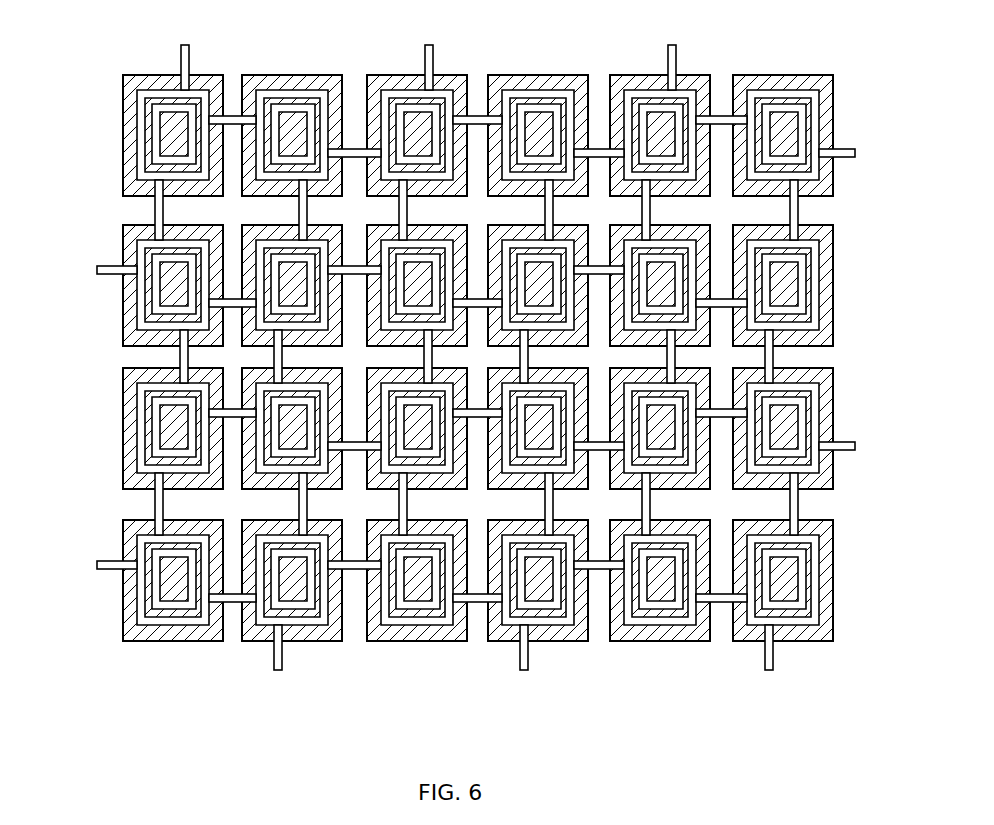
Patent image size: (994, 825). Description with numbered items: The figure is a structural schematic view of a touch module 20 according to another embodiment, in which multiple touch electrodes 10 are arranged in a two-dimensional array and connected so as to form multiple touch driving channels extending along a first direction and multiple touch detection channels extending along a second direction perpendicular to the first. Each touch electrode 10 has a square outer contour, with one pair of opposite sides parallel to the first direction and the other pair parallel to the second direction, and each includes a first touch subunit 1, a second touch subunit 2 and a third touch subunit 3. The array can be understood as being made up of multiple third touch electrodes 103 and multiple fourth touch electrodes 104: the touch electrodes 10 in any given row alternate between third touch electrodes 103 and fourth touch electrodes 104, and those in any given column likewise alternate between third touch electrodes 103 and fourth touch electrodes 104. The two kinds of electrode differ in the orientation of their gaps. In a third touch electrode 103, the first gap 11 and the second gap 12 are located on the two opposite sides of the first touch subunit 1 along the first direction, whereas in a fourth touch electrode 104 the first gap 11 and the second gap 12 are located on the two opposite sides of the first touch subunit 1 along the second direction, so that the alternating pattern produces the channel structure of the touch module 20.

The touch module 20 is at (78, 95).
The touch electrode 10 is at (122, 530).
The first touch subunit 1 is at (128, 440).
The second touch subunit 2 is at (140, 448).
The third touch subunit 3 is at (140, 426).
The first gap 11 is at (189, 74).
The second gap 12 is at (158, 192).
The third touch electrode 103 is at (288, 78).
The fourth touch electrode 104 is at (151, 75).